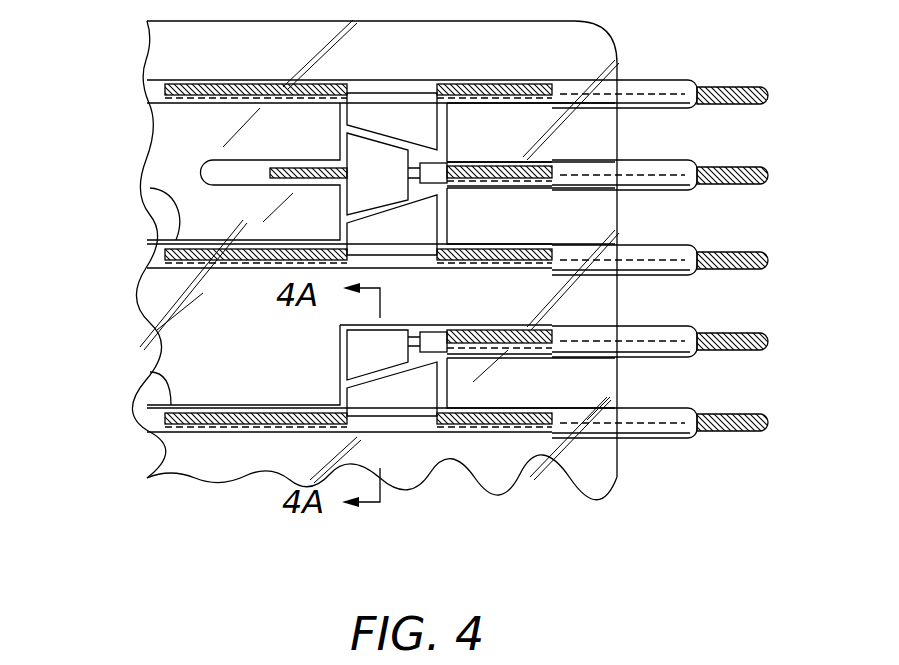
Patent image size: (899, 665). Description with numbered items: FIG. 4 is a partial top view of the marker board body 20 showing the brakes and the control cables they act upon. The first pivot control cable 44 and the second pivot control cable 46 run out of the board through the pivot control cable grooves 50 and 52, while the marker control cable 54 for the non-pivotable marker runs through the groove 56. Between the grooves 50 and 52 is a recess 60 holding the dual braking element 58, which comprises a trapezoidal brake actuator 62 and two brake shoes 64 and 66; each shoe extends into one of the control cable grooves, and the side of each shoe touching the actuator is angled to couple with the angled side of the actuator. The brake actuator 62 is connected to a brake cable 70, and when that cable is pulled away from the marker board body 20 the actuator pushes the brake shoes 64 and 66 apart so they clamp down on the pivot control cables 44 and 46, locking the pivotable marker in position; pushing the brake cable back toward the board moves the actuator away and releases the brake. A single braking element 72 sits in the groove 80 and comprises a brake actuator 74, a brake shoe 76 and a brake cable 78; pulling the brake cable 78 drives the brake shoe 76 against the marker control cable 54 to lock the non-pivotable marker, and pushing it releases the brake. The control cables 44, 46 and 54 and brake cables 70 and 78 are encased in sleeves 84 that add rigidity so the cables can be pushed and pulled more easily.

The marker board body 20 is at (585, 480).
The first pivot control cable 44 is at (732, 250).
The second pivot control cable 46 is at (732, 83).
The pivot control cable groove 50 is at (150, 189).
The pivot control cable groove 52 is at (150, 97).
The marker control cable 54 is at (733, 415).
The groove 56 is at (147, 372).
The dual braking element 58 is at (158, 38).
The recess 60 is at (473, 158).
The brake actuator 62 is at (389, 187).
The brake shoe 64 is at (411, 127).
The brake shoe 66 is at (410, 243).
The brake cable 70 is at (732, 165).
The single braking element 72 is at (423, 458).
The brake actuator 74 is at (391, 362).
The brake shoe 76 is at (412, 408).
The brake cable 78 is at (737, 333).
The groove 80 is at (478, 325).
The sleeves 84 is at (633, 85).